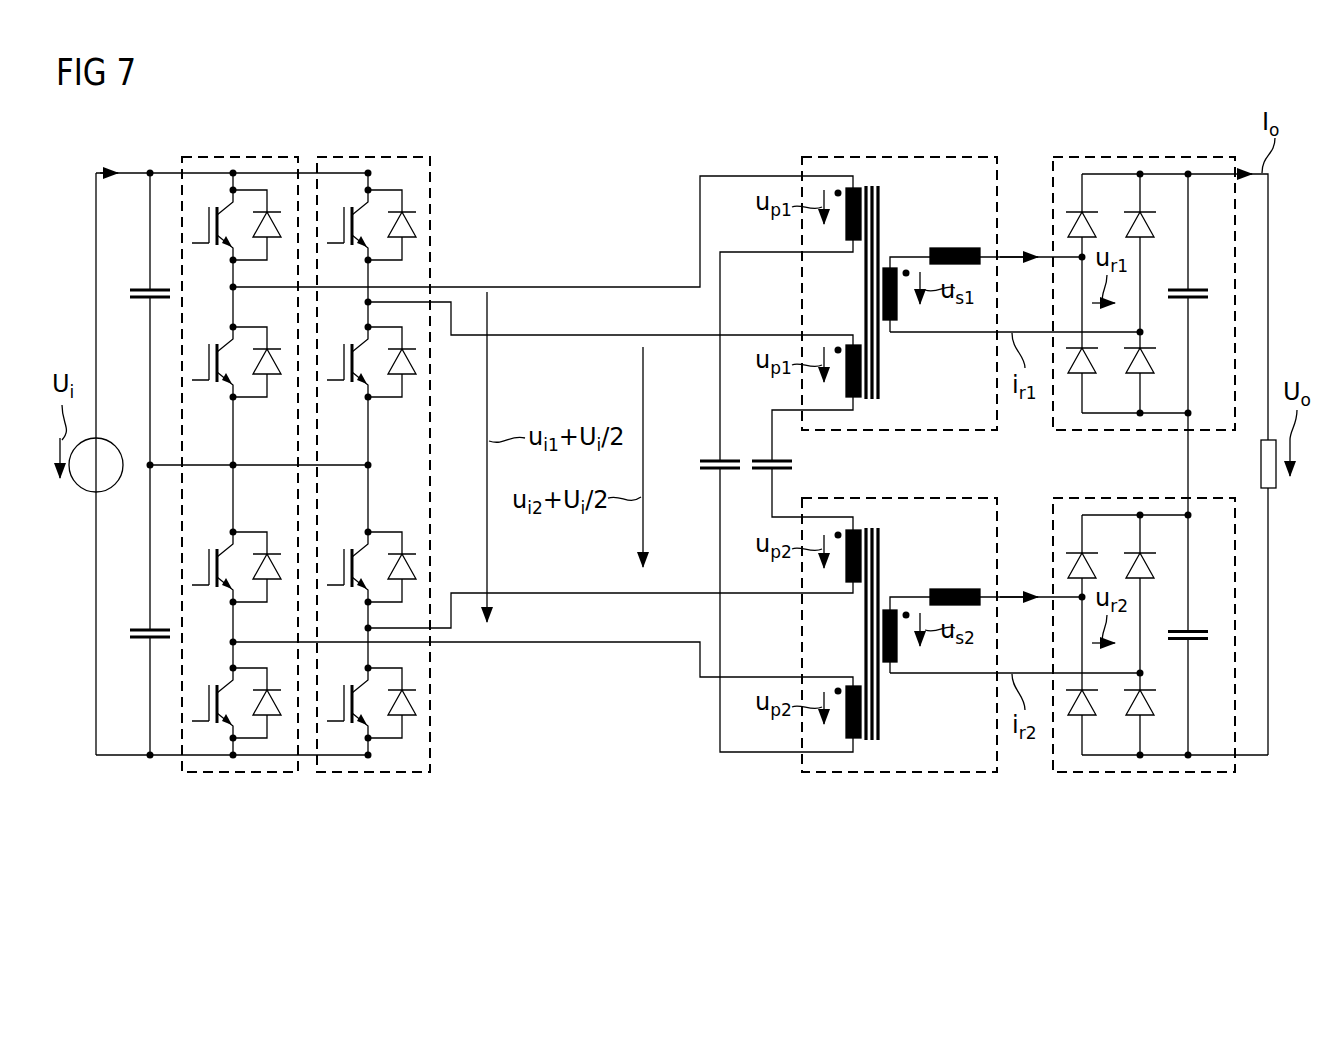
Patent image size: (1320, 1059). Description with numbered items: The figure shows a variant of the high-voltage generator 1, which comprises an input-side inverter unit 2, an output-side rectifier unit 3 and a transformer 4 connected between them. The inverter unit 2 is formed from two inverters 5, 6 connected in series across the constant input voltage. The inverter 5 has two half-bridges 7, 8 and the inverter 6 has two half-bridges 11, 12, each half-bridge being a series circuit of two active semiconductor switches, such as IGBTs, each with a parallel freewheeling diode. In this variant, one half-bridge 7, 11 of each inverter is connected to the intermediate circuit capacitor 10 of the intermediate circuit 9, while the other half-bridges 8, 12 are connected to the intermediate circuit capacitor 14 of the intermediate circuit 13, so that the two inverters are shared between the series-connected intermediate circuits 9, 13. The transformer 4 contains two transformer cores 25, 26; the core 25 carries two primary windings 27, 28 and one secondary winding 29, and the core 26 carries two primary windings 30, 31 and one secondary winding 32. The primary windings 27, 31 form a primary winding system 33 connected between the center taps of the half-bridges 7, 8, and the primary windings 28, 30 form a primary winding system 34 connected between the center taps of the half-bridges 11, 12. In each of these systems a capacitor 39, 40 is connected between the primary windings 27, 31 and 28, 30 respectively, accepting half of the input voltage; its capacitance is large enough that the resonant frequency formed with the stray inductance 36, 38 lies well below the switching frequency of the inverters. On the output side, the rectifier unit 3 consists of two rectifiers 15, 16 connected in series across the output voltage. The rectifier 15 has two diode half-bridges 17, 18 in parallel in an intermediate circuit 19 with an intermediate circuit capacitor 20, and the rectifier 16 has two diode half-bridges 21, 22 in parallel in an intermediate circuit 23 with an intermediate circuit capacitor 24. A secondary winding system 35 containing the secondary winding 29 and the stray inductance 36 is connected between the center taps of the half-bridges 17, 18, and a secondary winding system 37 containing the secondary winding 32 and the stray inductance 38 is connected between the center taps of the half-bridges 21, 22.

The high-voltage generator 1 is at (1248, 108).
The inverter unit 2 is at (317, 430).
The rectifier unit 3 is at (1158, 465).
The transformer 4 is at (960, 157).
The inverter 5 is at (278, 157).
The inverter 6 is at (415, 157).
The half-bridge 7 is at (233, 174).
The half-bridge 8 is at (233, 756).
The intermediate circuit 9 is at (212, 173).
The intermediate circuit capacitor 10 is at (142, 290).
The half-bridge 11 is at (368, 174).
The half-bridge 12 is at (368, 756).
The intermediate circuit 13 is at (207, 772).
The intermediate circuit capacitor 14 is at (142, 630).
The rectifier 15 is at (1180, 157).
The rectifier 16 is at (1213, 772).
The half-bridge 17 is at (1073, 190).
The half-bridge 18 is at (1148, 190).
The intermediate circuit 19 is at (1110, 174).
The intermediate circuit capacitor 20 is at (1198, 290).
The half-bridge 21 is at (1075, 738).
The half-bridge 22 is at (1148, 738).
The intermediate circuit 23 is at (1108, 755).
The intermediate circuit capacitor 24 is at (1198, 632).
The transformer core 25 is at (872, 186).
The transformer core 26 is at (872, 528).
The primary winding 27 is at (853, 188).
The primary winding 28 is at (853, 345).
The secondary winding 29 is at (888, 268).
The primary winding 30 is at (853, 530).
The primary winding 31 is at (853, 686).
The secondary winding 32 is at (888, 610).
The primary winding system 33 is at (530, 286).
The primary winding system 34 is at (672, 337).
The secondary winding system 35 is at (1012, 250).
The stray inductance 36 is at (952, 248).
The secondary winding system 37 is at (1012, 590).
The stray inductance 38 is at (952, 589).
The capacitor 39 is at (726, 470).
The capacitor 40 is at (770, 460).